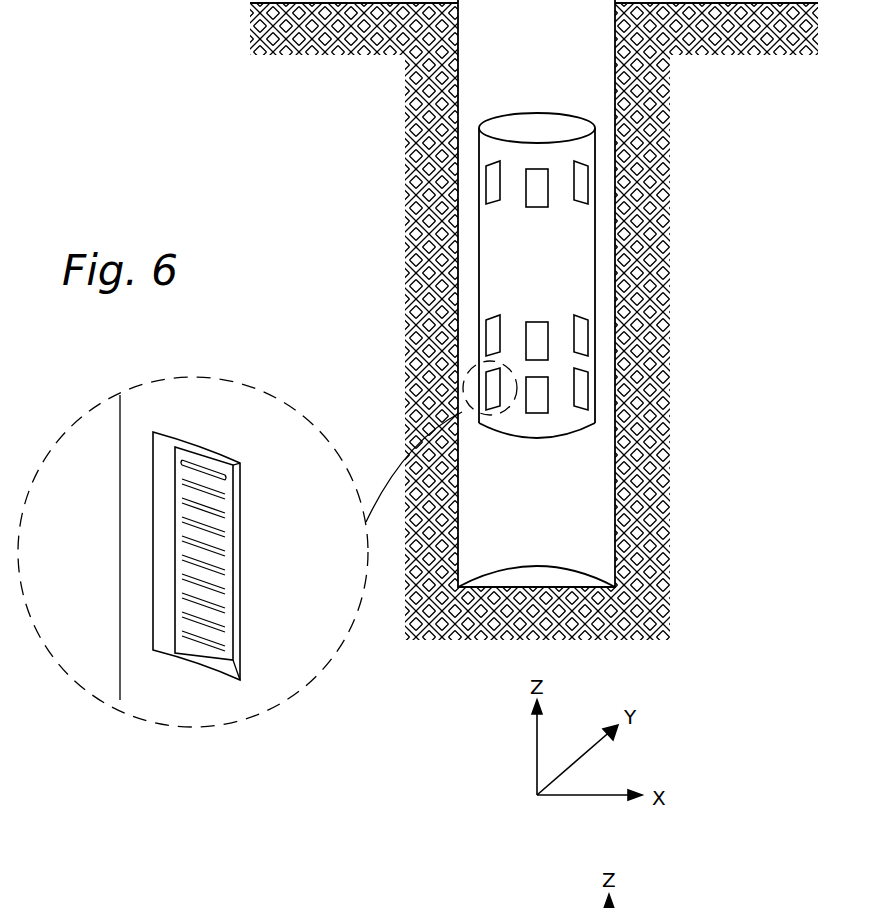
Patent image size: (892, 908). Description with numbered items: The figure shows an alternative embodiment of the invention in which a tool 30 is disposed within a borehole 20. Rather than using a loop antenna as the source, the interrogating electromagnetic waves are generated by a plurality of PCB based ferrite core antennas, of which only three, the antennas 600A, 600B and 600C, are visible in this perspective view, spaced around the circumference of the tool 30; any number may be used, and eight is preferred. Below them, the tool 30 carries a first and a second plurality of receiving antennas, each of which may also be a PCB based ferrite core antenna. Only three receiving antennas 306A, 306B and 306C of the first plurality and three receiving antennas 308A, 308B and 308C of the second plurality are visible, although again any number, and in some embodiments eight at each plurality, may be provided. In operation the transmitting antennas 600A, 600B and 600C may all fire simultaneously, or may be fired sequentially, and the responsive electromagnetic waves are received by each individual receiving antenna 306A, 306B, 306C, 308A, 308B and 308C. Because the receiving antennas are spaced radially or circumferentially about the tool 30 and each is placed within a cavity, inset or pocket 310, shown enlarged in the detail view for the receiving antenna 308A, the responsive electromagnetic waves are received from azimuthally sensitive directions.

The borehole 20 is at (552, 58).
The tool 30 is at (578, 263).
The PCB based ferrite core antenna 600A is at (490, 186).
The PCB based ferrite core antenna 600B is at (537, 201).
The PCB based ferrite core antenna 600C is at (582, 190).
The receiving antenna 306A is at (490, 345).
The receiving antenna 306B is at (535, 330).
The receiving antenna 306C is at (583, 345).
The receiving antenna 308A is at (490, 398).
The receiving antenna 308B is at (537, 405).
The receiving antenna 308C is at (583, 399).
The cavity, inset or pocket 310 is at (176, 522).